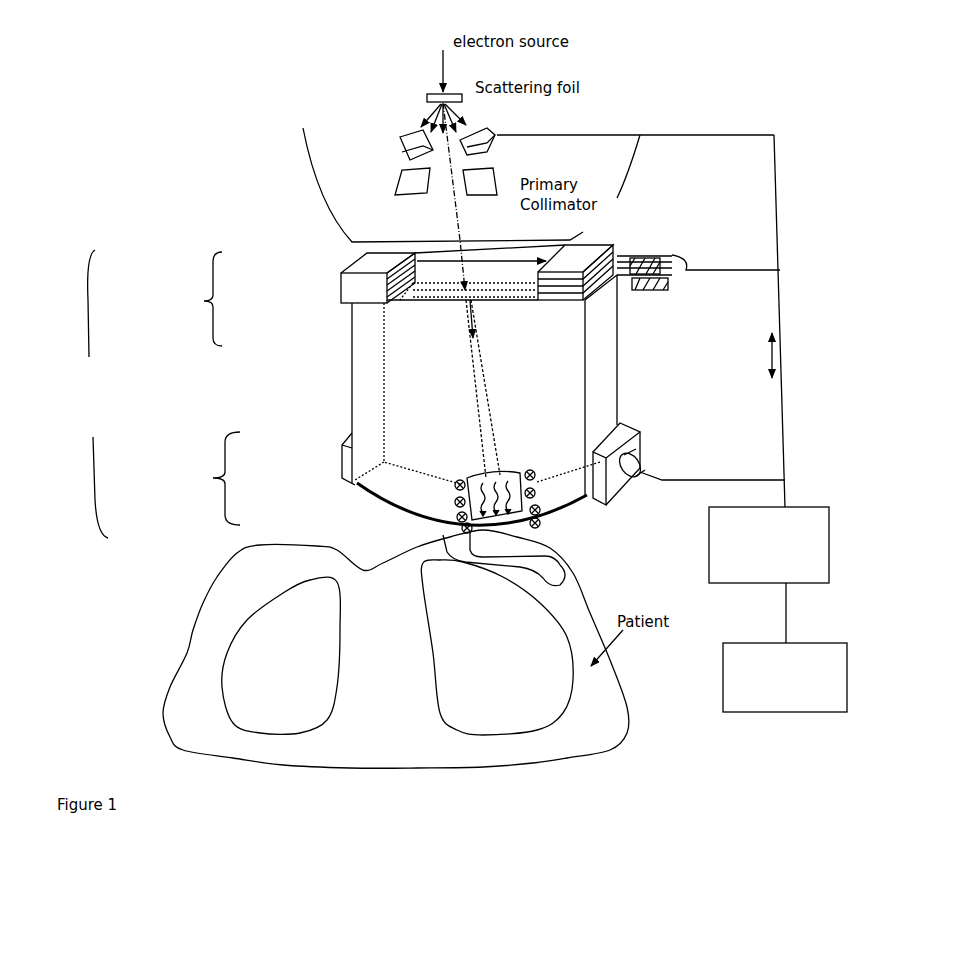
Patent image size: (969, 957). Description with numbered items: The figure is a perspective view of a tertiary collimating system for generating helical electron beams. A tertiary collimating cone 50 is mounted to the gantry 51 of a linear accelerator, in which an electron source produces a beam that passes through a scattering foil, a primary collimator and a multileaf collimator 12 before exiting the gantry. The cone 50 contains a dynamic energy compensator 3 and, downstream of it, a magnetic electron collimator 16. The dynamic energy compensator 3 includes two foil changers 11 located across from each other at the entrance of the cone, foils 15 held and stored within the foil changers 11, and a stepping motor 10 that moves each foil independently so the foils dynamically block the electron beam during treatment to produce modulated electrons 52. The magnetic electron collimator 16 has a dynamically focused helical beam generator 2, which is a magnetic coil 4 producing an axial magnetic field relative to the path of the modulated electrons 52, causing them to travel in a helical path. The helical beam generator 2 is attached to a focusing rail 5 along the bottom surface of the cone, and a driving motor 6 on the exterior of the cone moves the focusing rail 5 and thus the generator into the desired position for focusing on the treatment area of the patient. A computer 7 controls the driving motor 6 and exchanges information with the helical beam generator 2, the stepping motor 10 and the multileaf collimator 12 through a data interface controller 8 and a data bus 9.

The gantry 51 is at (507, 179).
The multileaf collimator 12 is at (596, 206).
The foil changer 11 is at (364, 288).
The foils 15 is at (412, 302).
The dynamic energy compensator 3 is at (169, 305).
The tertiary collimating cone 50 is at (335, 394).
The magnetic electron collimator 16 is at (185, 484).
The focusing rail 5 is at (388, 497).
The helical beam generator 2 is at (474, 474).
The modulated electrons 52 is at (507, 290).
The magnetic coil 4 is at (542, 481).
The stepping motor 10 is at (698, 258).
The data bus 9 is at (744, 321).
The driving motor 6 is at (689, 464).
The data interface controller 8 is at (769, 545).
The computer 7 is at (785, 677).